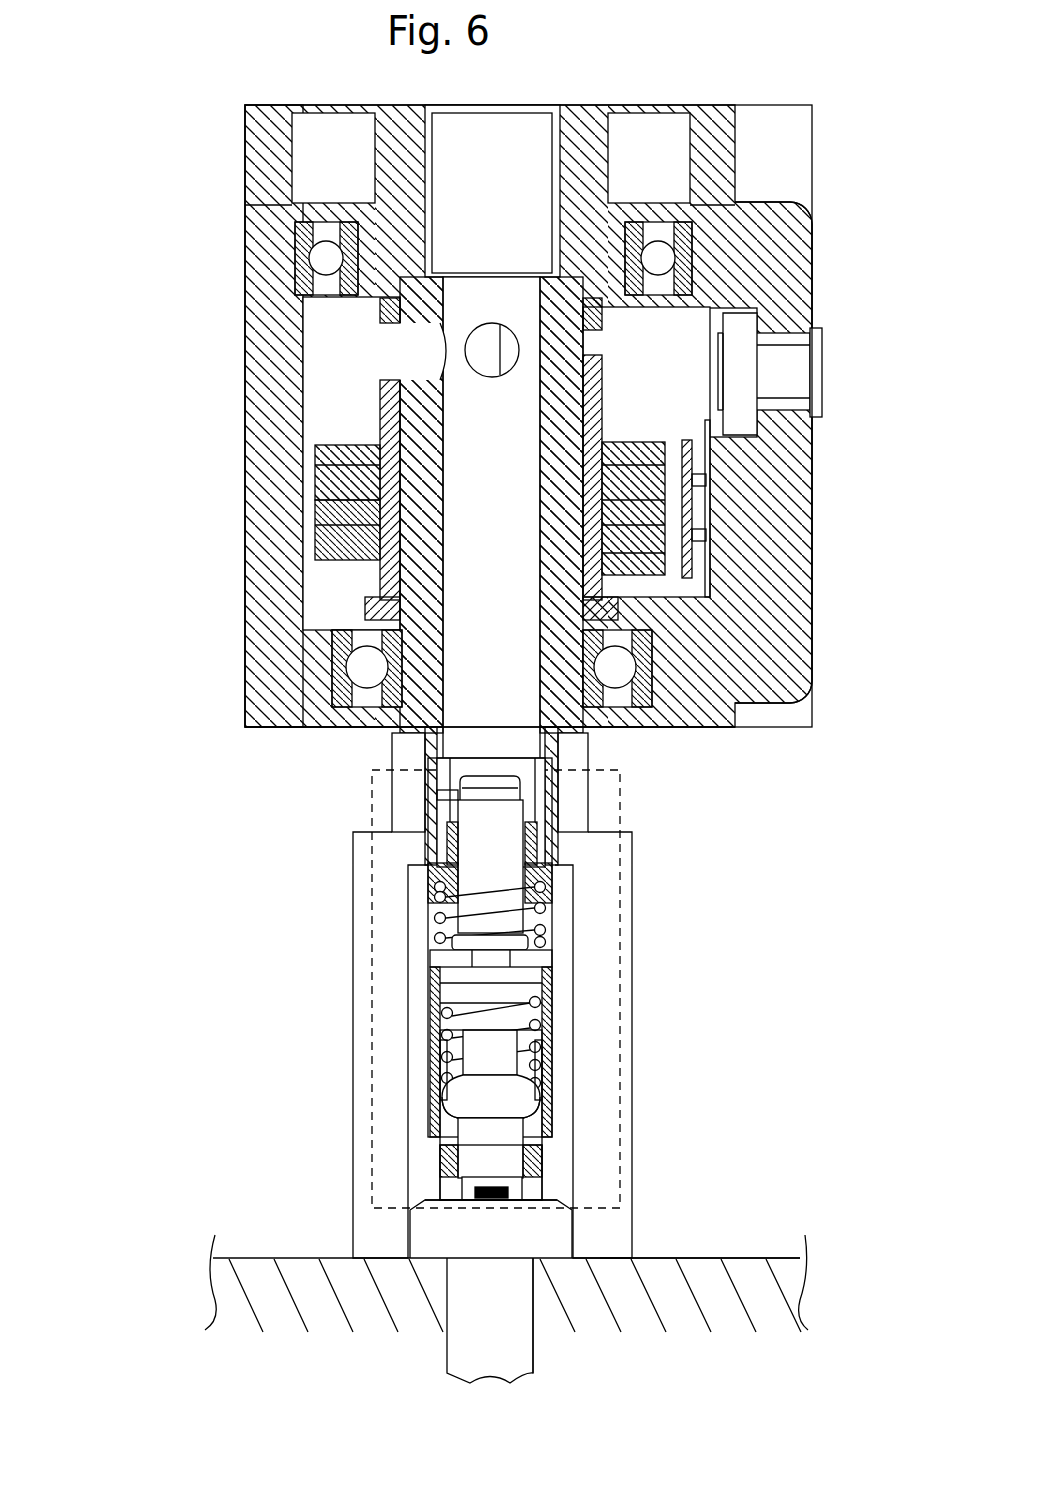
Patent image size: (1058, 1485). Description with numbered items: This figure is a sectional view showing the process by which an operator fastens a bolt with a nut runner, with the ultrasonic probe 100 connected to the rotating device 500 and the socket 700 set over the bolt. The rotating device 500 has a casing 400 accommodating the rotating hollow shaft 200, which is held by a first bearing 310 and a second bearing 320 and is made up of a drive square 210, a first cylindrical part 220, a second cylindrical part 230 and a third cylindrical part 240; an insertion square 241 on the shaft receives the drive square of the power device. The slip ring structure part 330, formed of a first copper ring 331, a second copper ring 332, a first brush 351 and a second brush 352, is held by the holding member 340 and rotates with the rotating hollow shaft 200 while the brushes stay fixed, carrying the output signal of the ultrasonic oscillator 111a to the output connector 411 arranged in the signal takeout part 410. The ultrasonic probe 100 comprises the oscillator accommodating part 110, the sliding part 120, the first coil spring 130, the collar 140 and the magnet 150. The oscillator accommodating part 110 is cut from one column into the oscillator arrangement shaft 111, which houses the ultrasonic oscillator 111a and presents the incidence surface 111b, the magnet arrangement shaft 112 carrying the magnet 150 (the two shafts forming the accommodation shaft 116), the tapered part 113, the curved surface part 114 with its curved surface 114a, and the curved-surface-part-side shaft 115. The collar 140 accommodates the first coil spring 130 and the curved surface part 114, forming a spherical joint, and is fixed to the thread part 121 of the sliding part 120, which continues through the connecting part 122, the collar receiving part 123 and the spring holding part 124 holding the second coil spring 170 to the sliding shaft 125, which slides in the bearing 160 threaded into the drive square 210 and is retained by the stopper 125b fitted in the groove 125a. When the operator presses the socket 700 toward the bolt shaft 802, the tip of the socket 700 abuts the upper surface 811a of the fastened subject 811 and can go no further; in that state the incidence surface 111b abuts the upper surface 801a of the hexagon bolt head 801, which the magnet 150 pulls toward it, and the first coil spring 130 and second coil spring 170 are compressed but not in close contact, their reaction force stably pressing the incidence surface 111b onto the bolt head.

The ultrasonic probe 100 is at (622, 822).
The oscillator accommodating part 110 is at (163, 1016).
The oscillator arrangement shaft 111 is at (465, 1188).
The ultrasonic oscillator 111a is at (510, 1190).
The incidence surface 111b is at (520, 1205).
The magnet arrangement shaft 112 is at (467, 1160).
The tapered part 113 is at (458, 1118).
The curved surface part 114 is at (455, 1097).
The curved surface 114a is at (455, 1097).
The curved-surface-part-side shaft 115 is at (470, 1048).
The accommodation shaft 116 is at (266, 1163).
The sliding part 120 is at (238, 826).
The thread part 121 is at (450, 993).
The connecting part 122 is at (455, 975).
The collar receiving part 123 is at (450, 958).
The spring holding part 124 is at (450, 940).
The sliding shaft 125 is at (490, 855).
The groove 125a is at (520, 790).
The stopper 125b is at (440, 790).
The first coil spring 130 is at (540, 1067).
The collar 140 is at (525, 1028).
The magnet 150 is at (525, 1160).
The bearing 160 is at (548, 870).
The second coil spring 170 is at (541, 908).
The rotating hollow shaft 200 is at (110, 123).
The drive square 210 is at (390, 750).
The first cylindrical part 220 is at (410, 415).
The second cylindrical part 230 is at (380, 272).
The third cylindrical part 240 is at (405, 130).
The insertion square 241 is at (495, 130).
The first bearing 310 is at (320, 262).
The second bearing 320 is at (367, 667).
The slip ring structure part 330 is at (668, 460).
The first copper ring 331 is at (330, 545).
The second copper ring 332 is at (330, 482).
The holding member 340 is at (692, 440).
The first brush 351 is at (706, 535).
The second brush 352 is at (706, 480).
The casing 400 is at (245, 400).
The signal takeout part 410 is at (814, 300).
The output connector 411 is at (823, 365).
The rotating device 500 is at (740, 152).
The socket 700 is at (635, 945).
The hexagon bolt head 801 is at (565, 1238).
The upper surface 801a is at (540, 1200).
The bolt shaft 802 is at (455, 1338).
The fastened subject 811 is at (790, 1295).
The upper surface 811a is at (740, 1255).